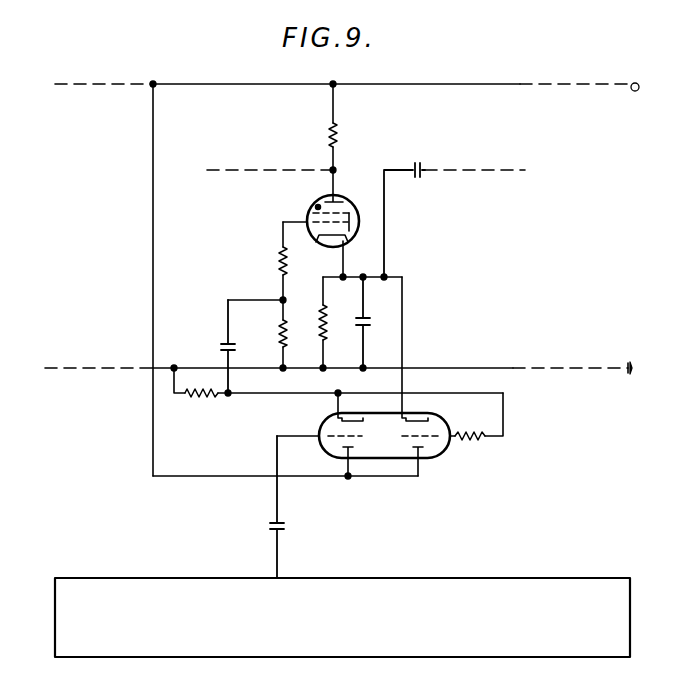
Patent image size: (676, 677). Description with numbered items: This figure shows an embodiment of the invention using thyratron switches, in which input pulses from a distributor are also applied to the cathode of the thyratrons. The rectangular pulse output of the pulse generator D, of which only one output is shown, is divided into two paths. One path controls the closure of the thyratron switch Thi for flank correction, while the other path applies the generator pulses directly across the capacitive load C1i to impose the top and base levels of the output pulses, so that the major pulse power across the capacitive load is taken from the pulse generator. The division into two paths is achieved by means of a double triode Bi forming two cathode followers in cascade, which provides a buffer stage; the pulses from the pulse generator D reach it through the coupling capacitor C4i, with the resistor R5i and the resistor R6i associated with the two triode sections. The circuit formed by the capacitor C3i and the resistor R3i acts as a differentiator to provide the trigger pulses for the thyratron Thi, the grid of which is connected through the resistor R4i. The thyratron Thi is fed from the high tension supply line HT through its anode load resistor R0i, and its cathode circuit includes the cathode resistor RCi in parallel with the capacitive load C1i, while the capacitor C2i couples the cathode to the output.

The high tension supply line HT is at (349, 270).
The anode load resistor R0i is at (290, 139).
The thyratron valve Thi is at (321, 237).
The grid resistor R4i is at (264, 262).
The differentiator resistor R3i is at (267, 335).
The differentiator capacitor C3i is at (238, 348).
The cathode resistor RCi is at (346, 322).
The capacitive load C1i is at (392, 347).
The coupling capacitor C2i is at (453, 221).
The resistor R5i is at (338, 393).
The resistor R6i is at (476, 426).
The double triode Bi is at (301, 436).
The coupling capacitor C4i is at (294, 507).
The pulse generator D is at (342, 617).